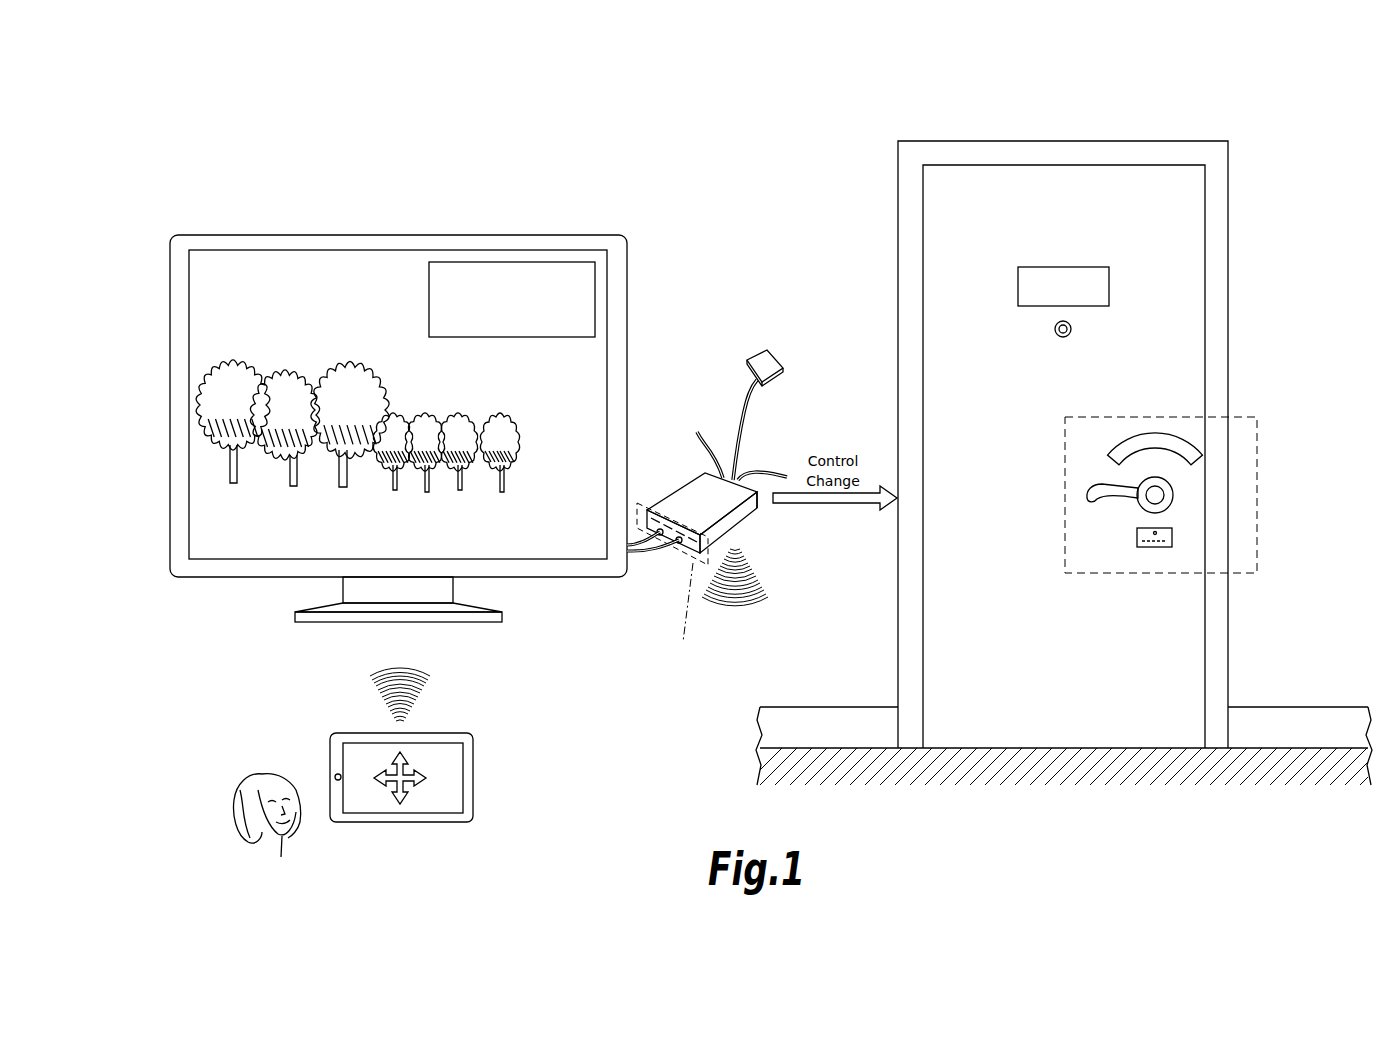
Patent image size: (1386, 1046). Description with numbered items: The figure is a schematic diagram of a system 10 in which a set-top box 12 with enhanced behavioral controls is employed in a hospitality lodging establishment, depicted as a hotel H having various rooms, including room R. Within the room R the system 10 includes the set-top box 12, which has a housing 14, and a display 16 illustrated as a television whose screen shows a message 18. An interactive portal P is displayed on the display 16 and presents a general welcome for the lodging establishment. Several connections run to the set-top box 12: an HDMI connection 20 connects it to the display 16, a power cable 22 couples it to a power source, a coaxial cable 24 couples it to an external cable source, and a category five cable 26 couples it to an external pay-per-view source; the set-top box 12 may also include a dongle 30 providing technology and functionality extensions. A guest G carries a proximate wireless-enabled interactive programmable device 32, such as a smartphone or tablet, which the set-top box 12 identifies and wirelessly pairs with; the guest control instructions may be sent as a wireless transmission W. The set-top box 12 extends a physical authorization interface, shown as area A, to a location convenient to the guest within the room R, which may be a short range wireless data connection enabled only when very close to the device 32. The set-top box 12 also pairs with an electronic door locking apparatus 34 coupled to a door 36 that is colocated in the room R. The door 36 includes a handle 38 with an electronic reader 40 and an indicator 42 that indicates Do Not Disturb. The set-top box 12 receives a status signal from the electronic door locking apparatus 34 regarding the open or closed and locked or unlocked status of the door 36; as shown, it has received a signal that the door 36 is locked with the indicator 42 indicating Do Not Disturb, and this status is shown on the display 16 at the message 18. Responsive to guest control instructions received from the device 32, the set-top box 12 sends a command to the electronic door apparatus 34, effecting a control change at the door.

The system 10 is at (735, 282).
The set-top box 12 is at (662, 486).
The housing 14 is at (747, 517).
The display 16 is at (218, 230).
The message 18 is at (541, 262).
The HDMI connection 20 is at (652, 551).
The power cable 22 is at (633, 550).
The coaxial cable 24 is at (705, 440).
The category five (Cat 5) cable 26 is at (765, 472).
The dongle 30 is at (773, 345).
The proximate wireless-enabled interactive programmable device 32 is at (475, 783).
The electronic door locking apparatus 34 is at (1257, 430).
The door 36 is at (1243, 190).
The handle 38 is at (1098, 483).
The electronic reader 40 is at (1155, 548).
The indicator 42 is at (1153, 433).
The hotel H is at (793, 86).
The room R is at (437, 225).
The interactive portal P is at (197, 538).
The physical authorization interface A is at (750, 570).
The wireless transmission W is at (417, 666).
The guest G is at (233, 812).